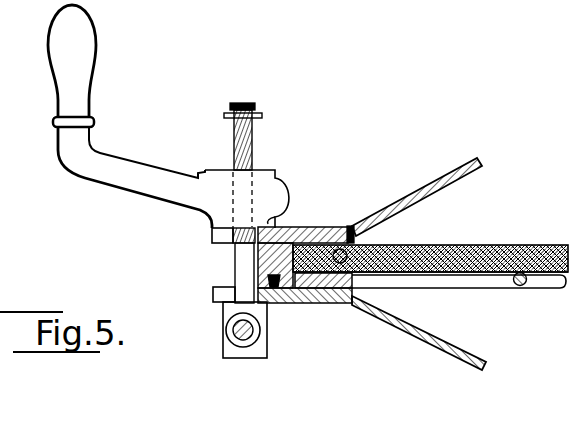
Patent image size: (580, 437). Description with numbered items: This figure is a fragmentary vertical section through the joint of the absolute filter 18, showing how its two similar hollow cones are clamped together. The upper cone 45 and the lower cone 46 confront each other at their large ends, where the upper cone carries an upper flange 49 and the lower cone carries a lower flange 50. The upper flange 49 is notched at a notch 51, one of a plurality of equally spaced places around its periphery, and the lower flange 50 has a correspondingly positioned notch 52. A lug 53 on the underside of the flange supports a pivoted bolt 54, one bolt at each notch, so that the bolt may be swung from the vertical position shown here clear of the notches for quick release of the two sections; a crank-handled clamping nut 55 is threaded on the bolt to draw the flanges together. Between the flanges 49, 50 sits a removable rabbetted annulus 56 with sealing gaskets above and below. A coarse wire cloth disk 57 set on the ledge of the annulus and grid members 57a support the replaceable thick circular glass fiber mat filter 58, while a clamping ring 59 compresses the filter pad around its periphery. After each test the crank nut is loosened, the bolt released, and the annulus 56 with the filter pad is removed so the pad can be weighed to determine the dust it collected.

The absolute filter 18 is at (458, 160).
The upper cone 45 is at (412, 196).
The lower cone 46 is at (425, 338).
The upper flange 49 is at (303, 230).
The lower flange 50 is at (333, 303).
The notch 51 is at (230, 233).
The notch 52 is at (223, 297).
The lug 53 is at (227, 345).
The pivoted bolt 54 is at (242, 264).
The crank-handled clamping nut 55 is at (130, 170).
The removable rabbetted annulus 56 is at (288, 278).
The coarse wire cloth disk 57 is at (463, 273).
The grid member 57a is at (522, 288).
The glass fiber mat filter 58 is at (405, 248).
The clamping ring 59 is at (346, 226).